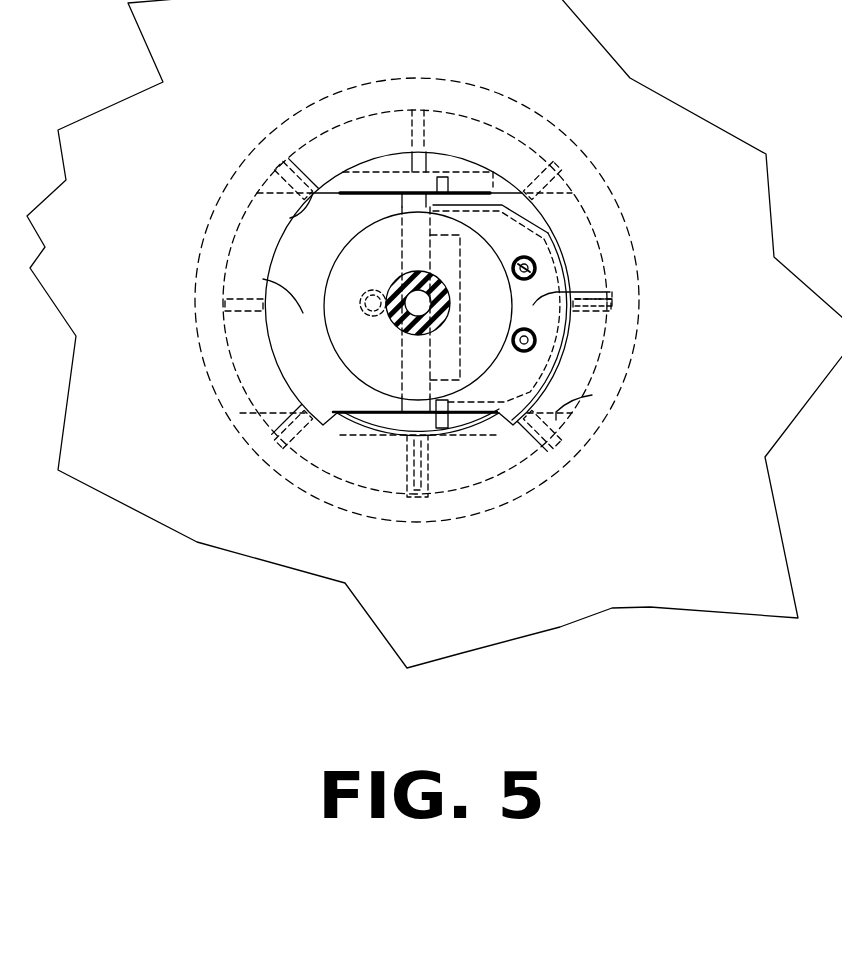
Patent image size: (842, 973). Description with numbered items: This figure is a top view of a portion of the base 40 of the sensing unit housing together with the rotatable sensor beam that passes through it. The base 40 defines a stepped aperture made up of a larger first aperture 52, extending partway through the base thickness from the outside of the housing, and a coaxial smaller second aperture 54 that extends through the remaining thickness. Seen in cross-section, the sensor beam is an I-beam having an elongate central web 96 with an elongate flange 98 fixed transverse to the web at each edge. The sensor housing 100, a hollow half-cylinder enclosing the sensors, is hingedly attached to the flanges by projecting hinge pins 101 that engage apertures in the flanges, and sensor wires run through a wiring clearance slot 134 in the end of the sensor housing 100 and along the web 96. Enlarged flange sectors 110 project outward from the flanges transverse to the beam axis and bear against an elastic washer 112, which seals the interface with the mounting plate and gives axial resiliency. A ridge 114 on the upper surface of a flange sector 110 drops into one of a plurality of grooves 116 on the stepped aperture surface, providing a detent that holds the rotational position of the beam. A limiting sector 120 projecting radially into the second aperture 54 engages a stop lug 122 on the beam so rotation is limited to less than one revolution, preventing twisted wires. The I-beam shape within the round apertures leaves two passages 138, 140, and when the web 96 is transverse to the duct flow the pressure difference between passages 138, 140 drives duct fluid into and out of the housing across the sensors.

The base 40 is at (762, 314).
The first aperture 52 is at (611, 272).
The second aperture 54 is at (268, 352).
The central web 96 is at (403, 397).
The flange 98 is at (470, 180).
The sensor housing 100 is at (548, 220).
The hinge pins 101 is at (446, 184).
The flange sectors 110 is at (290, 218).
The elastic washer 112 is at (633, 339).
The ridge 114 is at (420, 460).
The grooves 116 is at (423, 115).
The limiting sector 120 is at (340, 415).
The stop lug 122 is at (432, 158).
The wiring clearance slot 134 is at (460, 257).
The fluid passage 138 is at (263, 279).
The fluid passage 140 is at (573, 295).